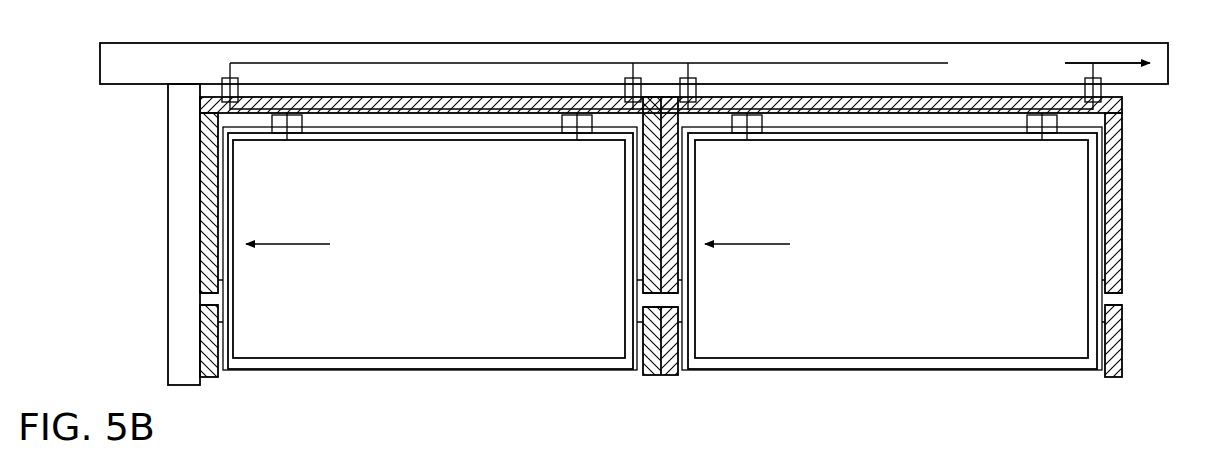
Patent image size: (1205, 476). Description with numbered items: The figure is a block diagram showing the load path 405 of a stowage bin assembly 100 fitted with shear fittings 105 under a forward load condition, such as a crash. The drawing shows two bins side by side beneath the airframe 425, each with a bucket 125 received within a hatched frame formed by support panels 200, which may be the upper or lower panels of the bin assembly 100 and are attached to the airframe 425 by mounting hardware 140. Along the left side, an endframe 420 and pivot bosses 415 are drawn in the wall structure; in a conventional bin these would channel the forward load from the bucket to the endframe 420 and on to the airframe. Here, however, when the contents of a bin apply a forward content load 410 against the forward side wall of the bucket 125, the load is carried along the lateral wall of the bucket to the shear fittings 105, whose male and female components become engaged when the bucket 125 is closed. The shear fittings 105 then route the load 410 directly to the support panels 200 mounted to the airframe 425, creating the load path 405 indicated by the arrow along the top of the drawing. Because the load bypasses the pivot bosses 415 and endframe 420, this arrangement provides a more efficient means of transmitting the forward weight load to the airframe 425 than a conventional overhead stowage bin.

The stowage bin assembly 100 is at (1066, 25).
The shear fitting 105 is at (300, 133).
The bucket 125 is at (440, 372).
The mounting hardware 140 is at (222, 78).
The support panel 200 is at (1115, 107).
The load path 405 is at (452, 63).
The forward content load 410 is at (287, 243).
The pivot boss 415 is at (222, 300).
The endframe 420 is at (175, 221).
The airframe 425 is at (896, 43).